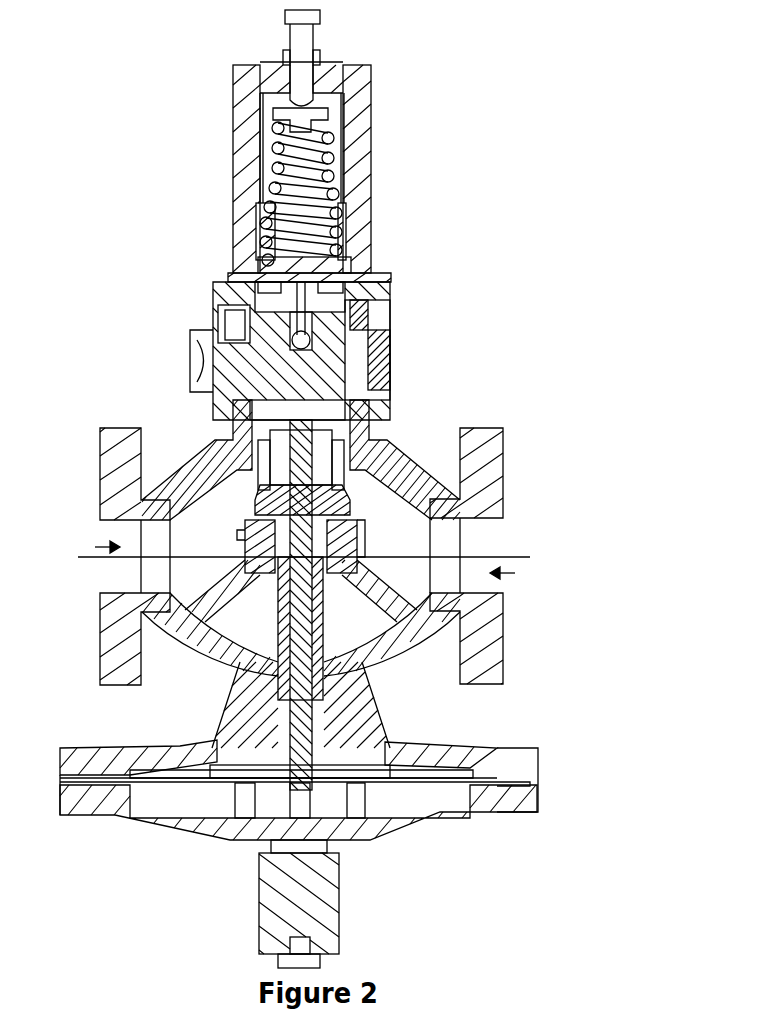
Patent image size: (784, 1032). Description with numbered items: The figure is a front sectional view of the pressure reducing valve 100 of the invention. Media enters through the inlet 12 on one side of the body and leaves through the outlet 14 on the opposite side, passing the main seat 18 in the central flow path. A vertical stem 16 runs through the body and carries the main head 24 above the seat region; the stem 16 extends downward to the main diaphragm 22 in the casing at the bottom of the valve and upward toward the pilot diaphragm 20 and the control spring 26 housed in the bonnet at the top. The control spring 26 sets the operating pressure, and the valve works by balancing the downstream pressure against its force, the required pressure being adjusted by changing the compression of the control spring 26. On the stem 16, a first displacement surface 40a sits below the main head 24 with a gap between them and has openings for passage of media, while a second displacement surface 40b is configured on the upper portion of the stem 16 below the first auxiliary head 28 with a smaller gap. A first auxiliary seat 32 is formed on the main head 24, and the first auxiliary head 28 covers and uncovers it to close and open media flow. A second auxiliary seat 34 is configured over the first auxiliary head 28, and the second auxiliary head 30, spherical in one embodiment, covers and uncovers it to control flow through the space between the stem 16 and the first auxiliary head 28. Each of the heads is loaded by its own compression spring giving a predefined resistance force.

The pressure reducing valve 100 is at (489, 201).
The control spring 26 is at (372, 102).
The pilot diaphragm 20 is at (372, 258).
The second auxiliary seat 34 is at (390, 373).
The main head 24 is at (225, 470).
The stem 16 is at (503, 510).
The second auxiliary head 30 is at (345, 428).
The first auxiliary head 28 is at (340, 470).
The main seat 18 is at (418, 505).
The first auxiliary seat 32 is at (258, 515).
The first displacement surface 40a is at (340, 505).
The second displacement surface 40b is at (265, 458).
The inlet 12 is at (112, 547).
The outlet 14 is at (515, 573).
The main diaphragm 22 is at (460, 748).